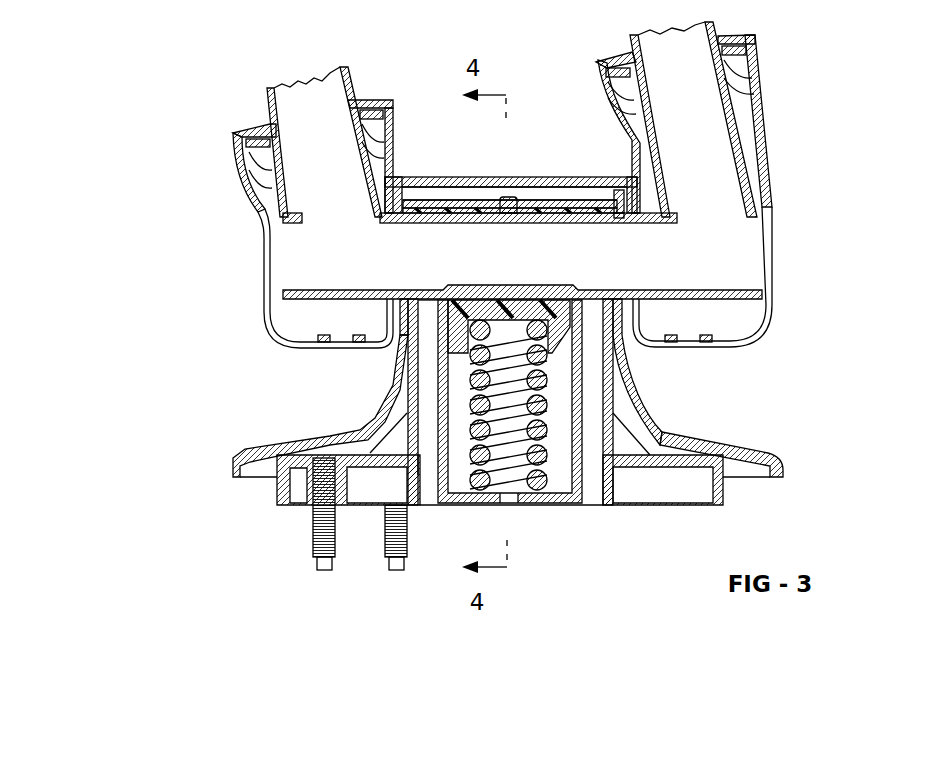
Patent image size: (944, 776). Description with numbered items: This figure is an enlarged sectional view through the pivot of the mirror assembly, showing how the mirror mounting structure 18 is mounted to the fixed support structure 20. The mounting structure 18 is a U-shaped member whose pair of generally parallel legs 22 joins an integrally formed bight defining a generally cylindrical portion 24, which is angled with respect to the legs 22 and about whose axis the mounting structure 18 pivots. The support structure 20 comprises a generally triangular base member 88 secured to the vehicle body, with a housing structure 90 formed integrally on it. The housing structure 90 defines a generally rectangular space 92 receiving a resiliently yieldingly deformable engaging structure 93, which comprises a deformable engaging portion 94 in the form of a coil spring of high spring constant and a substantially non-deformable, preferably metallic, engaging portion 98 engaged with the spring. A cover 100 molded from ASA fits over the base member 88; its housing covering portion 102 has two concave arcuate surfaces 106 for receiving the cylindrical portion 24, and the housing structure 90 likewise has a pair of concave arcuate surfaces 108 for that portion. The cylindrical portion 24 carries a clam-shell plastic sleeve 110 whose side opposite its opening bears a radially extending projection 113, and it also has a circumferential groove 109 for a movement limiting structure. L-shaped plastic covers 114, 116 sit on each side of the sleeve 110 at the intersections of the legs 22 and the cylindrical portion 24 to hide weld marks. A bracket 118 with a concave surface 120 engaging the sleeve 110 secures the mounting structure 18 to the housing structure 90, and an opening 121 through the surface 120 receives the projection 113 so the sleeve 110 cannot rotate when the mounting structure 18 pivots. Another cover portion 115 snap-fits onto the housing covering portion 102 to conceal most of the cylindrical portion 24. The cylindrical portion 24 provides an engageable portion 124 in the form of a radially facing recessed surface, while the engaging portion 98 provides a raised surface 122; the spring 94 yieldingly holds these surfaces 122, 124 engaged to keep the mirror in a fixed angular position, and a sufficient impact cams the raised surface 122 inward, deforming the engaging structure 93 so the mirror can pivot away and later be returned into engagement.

The mirror mounting structure 18 is at (240, 98).
The fixed support structure 20 is at (205, 405).
The legs 22 is at (352, 88).
The cylindrical portion 24 is at (707, 300).
The base member 88 is at (610, 490).
The housing structure 90 is at (613, 405).
The rectangular space 92 is at (568, 483).
The deformable engaging structure 93 is at (440, 481).
The deformable engaging portion 94 is at (498, 485).
The non-deformable engaging portion 98 is at (436, 364).
The cover 100 is at (720, 443).
The housing covering portion 102 is at (635, 355).
The concave arcuate surfaces 106 is at (410, 300).
The concave arcuate surfaces 108 is at (423, 297).
The circumferential groove 109 is at (618, 225).
The plastic sleeve 110 is at (522, 206).
The projection 113 is at (512, 198).
The L-shaped plastic cover 114 is at (638, 203).
The cover portion 115 is at (398, 178).
The L-shaped plastic cover 116 is at (772, 193).
The bracket 118 is at (466, 200).
The concave surface 120 is at (578, 200).
The opening 121 is at (497, 200).
The raised surface 122 is at (483, 297).
The engageable portion 124 is at (507, 297).